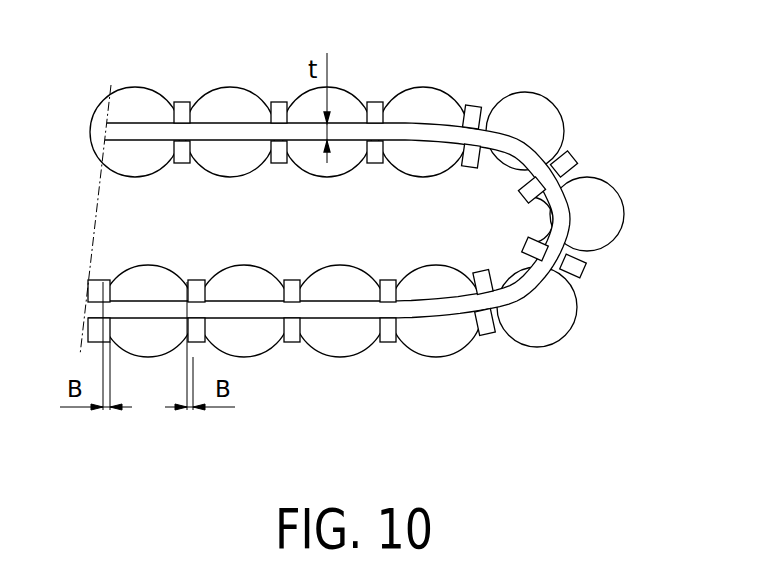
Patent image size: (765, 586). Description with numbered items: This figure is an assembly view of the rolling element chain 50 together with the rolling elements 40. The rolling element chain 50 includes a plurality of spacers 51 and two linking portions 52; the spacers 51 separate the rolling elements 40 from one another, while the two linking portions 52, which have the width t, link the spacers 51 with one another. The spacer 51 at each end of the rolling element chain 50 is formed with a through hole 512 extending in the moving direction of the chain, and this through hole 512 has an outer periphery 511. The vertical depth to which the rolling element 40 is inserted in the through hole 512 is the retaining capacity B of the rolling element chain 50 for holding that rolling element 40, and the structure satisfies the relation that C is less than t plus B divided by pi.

The rolling element 40 is at (427, 100).
The rolling element chain 50 is at (356, 212).
The spacer 51 is at (98, 290).
The outer periphery 511 is at (188, 290).
The through hole 512 is at (193, 288).
The linking portion 52 is at (252, 313).